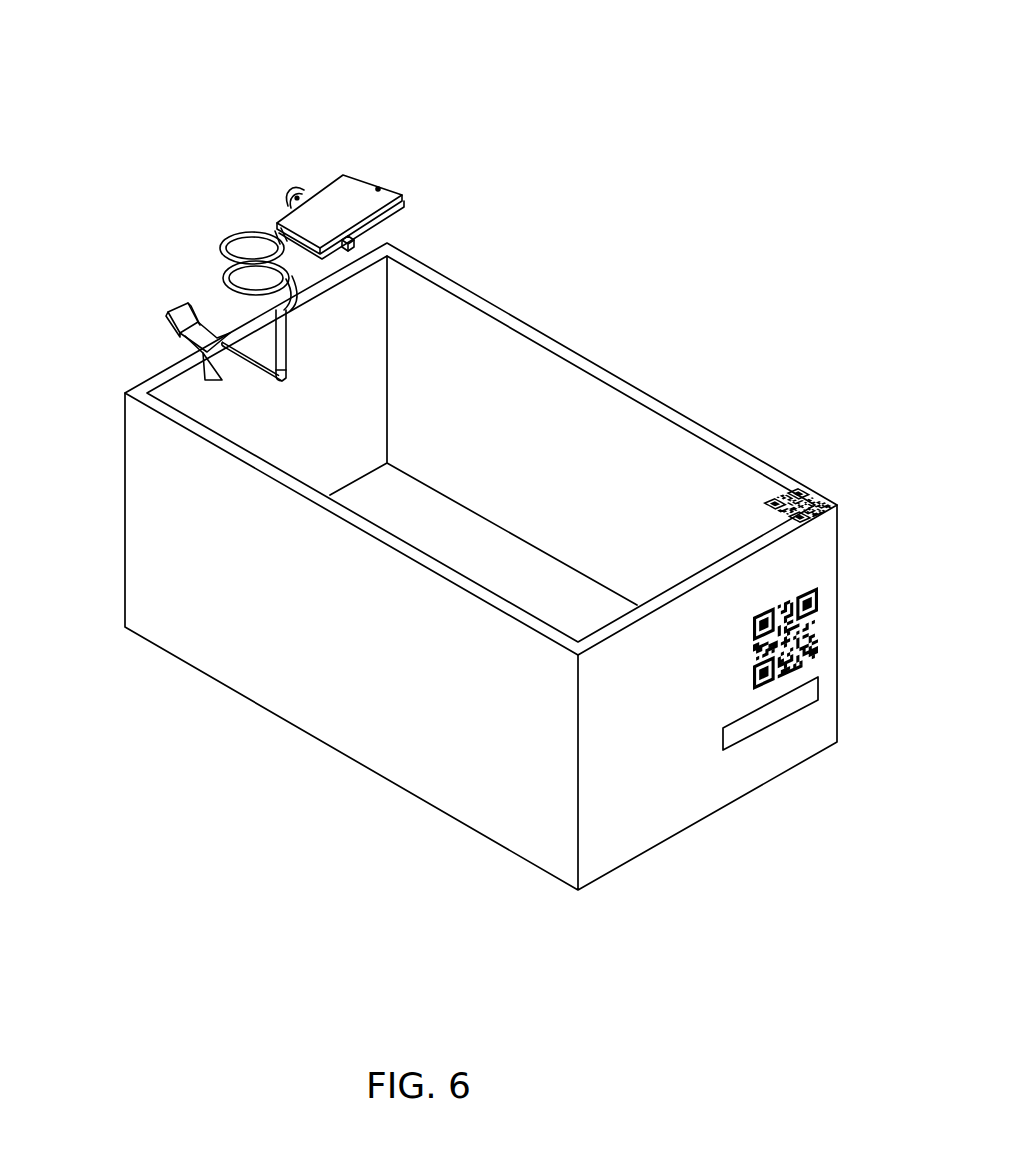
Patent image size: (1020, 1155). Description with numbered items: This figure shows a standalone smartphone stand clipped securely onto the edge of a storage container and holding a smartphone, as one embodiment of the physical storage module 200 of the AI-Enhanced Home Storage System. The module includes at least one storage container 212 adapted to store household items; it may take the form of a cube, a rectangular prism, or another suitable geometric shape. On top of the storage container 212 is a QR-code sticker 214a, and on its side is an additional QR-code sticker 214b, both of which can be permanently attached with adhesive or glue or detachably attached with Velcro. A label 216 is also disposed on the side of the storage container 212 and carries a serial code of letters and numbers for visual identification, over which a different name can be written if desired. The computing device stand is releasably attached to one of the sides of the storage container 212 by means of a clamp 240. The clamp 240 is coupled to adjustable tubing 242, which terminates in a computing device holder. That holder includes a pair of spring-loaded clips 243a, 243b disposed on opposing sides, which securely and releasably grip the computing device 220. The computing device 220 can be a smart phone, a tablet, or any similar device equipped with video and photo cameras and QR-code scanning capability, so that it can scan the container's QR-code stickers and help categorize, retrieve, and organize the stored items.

The physical storage module 200 is at (150, 65).
The storage container 212 is at (613, 370).
The QR-code sticker 214a is at (814, 490).
The QR-code sticker 214b is at (820, 617).
The label 216 is at (818, 686).
The computing device 220 is at (366, 194).
The clamp 240 is at (170, 326).
The adjustable tubing 242 is at (217, 270).
The spring-loaded clip 243a is at (319, 186).
The spring-loaded clip 243b is at (404, 210).